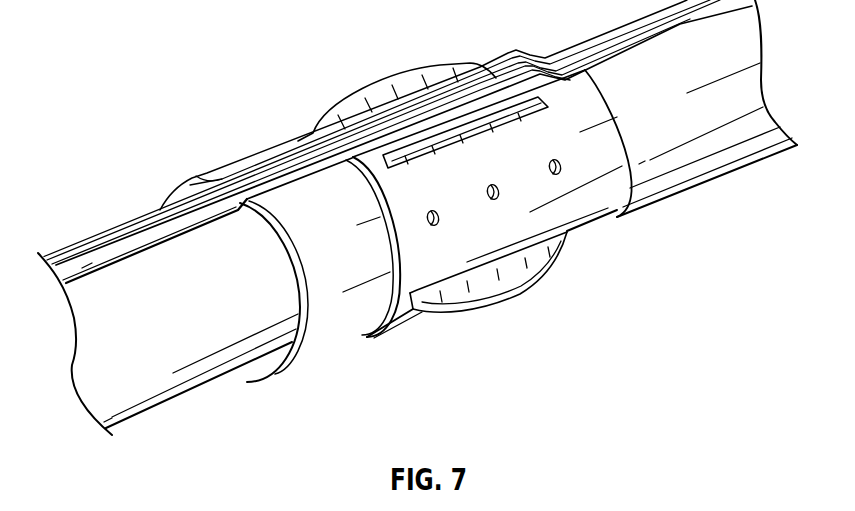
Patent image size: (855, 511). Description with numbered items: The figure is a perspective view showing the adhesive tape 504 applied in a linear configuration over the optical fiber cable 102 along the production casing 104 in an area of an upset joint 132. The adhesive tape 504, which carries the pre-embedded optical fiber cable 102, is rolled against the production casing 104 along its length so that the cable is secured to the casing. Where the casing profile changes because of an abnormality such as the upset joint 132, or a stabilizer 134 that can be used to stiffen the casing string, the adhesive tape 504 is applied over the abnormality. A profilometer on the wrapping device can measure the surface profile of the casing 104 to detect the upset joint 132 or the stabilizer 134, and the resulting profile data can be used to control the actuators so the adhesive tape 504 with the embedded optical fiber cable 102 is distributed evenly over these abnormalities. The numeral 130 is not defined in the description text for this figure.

The optical fiber cable 102 is at (60, 252).
The production casing 104 is at (161, 391).
The sensor housing 130 is at (345, 50).
The upset joint 132 is at (344, 355).
The stabilizer 134 is at (577, 258).
The adhesive tape 504 is at (145, 207).